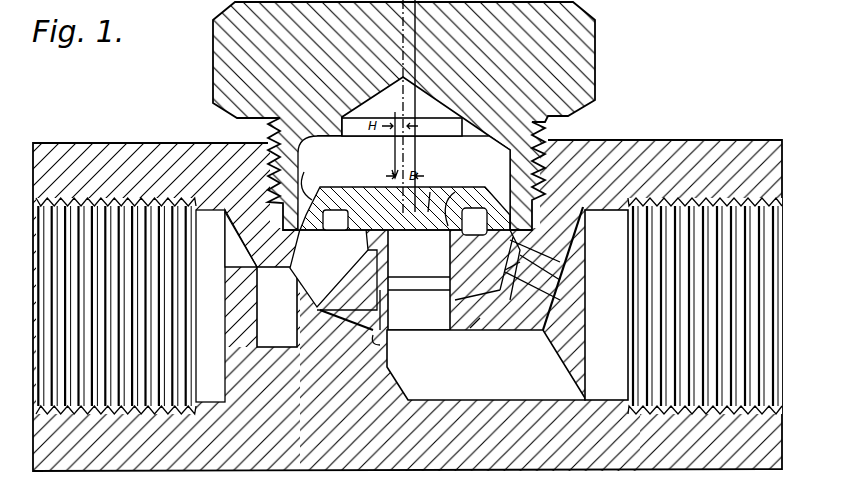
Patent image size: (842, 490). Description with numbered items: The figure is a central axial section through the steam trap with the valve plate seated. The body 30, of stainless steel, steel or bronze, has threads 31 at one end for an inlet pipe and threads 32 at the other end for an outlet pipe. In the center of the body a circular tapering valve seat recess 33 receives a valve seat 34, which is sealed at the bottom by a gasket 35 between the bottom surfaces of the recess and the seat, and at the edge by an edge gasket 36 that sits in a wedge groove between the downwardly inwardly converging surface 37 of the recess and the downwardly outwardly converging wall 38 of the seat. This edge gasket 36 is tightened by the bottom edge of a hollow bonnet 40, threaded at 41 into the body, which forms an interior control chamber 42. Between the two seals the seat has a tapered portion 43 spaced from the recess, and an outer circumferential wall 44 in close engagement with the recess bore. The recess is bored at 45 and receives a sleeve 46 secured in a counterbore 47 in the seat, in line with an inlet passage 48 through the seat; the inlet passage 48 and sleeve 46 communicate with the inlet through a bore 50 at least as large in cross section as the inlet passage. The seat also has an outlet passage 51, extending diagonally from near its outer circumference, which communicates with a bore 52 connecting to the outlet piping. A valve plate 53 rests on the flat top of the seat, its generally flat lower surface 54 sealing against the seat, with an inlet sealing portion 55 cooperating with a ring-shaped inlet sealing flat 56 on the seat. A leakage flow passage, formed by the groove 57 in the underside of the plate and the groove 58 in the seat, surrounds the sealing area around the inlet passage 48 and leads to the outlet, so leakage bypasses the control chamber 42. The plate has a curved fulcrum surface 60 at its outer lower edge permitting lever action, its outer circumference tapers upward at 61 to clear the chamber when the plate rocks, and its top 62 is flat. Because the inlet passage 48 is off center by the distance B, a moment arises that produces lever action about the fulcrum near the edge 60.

The body 30 is at (678, 137).
The threads 31 is at (730, 195).
The threads 32 is at (116, 285).
The valve seat recess 33 is at (540, 300).
The valve seat 34 is at (340, 300).
The gasket 35 is at (480, 330).
The edge gasket 36 is at (512, 240).
The downwardly inwardly converging surface 37 is at (520, 256).
The downwardly outwardly converging wall 38 is at (506, 274).
The hollow bonnet 40 is at (606, 305).
The threads 41 is at (542, 132).
The interior control chamber 42 is at (440, 160).
The tapered portion 43 is at (510, 270).
The outer circumferential wall 44 is at (300, 268).
The bore 45 is at (382, 345).
The sleeve 46 is at (388, 300).
The counterbore 47 is at (432, 260).
The inlet passage 48 is at (388, 244).
The bore 50 is at (486, 365).
The outlet passage 51 is at (330, 285).
The bore 52 is at (277, 334).
The valve plate 53 is at (416, 200).
The flat lower surface 54 is at (452, 215).
The inlet sealing portion 55 is at (384, 205).
The inlet sealing flat 56 is at (400, 262).
The groove 57 is at (470, 210).
The groove 58 is at (423, 285).
The fulcrum surface 60 is at (222, 255).
The taper 61 is at (326, 168).
The top 62 is at (338, 182).